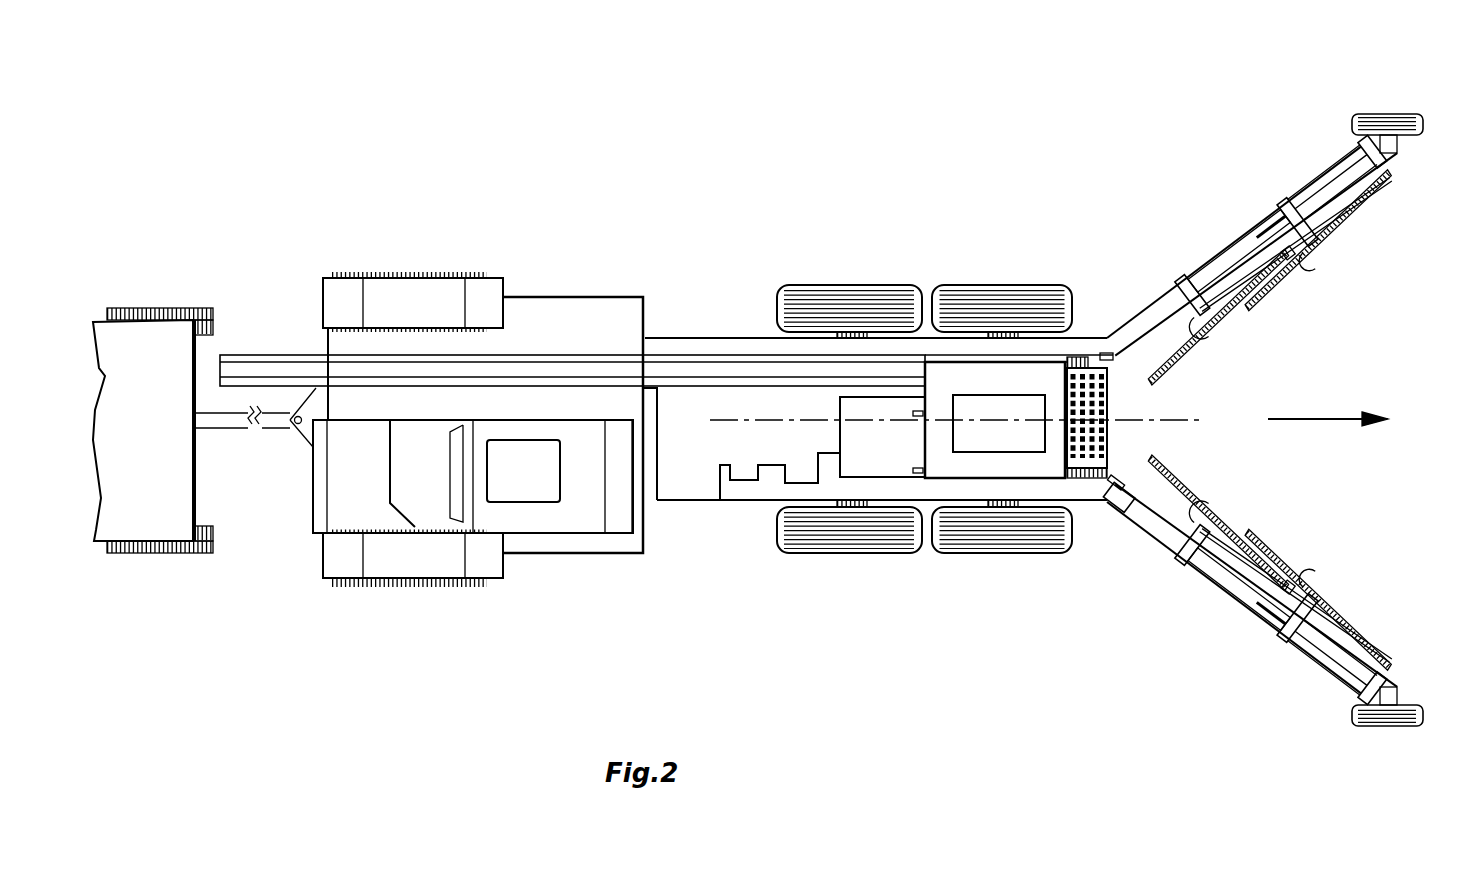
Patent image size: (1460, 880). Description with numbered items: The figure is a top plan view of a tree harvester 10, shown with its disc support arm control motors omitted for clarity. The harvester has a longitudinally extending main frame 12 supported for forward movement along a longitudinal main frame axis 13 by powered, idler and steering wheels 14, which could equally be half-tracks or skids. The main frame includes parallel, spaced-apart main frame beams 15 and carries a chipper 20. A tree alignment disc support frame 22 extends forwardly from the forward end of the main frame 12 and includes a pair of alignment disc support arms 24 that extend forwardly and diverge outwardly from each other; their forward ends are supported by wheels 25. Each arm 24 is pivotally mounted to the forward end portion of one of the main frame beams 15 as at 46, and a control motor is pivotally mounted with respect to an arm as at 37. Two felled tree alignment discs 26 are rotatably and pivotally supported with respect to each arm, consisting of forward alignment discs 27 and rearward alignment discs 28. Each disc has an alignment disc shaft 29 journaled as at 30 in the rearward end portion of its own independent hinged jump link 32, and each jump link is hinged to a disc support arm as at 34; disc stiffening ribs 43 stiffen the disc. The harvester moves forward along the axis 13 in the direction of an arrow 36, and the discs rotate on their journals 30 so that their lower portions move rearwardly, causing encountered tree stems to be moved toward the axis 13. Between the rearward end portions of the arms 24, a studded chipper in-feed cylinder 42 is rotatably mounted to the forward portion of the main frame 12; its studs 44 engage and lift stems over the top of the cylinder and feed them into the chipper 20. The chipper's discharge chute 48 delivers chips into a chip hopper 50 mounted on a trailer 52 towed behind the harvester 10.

The tree harvester 10 is at (976, 248).
The main frame 12 is at (660, 338).
The longitudinal main frame axis 13 is at (742, 421).
The wheels 14 is at (405, 270).
The main frame beams 15 is at (1073, 352).
The chipper 20 is at (920, 446).
The tree alignment disc support frame 22 is at (1170, 296).
The alignment disc support arms 24 is at (1153, 315).
The wheels 25 is at (1383, 113).
The felled tree alignment discs 26 is at (1238, 318).
The forward alignment discs 27 is at (1375, 200).
The rearward alignment discs 28 is at (1158, 378).
The alignment disc shaft 29 is at (1307, 230).
The journal 30 is at (1293, 203).
The hinged jump link 32 is at (1347, 160).
The hinge 34 is at (1390, 155).
The arrow 36 is at (1333, 417).
The pivotal mounting 37 is at (1133, 522).
The studded chipper in-feed cylinder 42 is at (1109, 372).
The disc stiffening ribs 43 is at (1347, 228).
The studs 44 is at (1107, 425).
The pivotal mounting 46 is at (1115, 482).
The discharge chute 48 is at (781, 368).
The chip hopper 50 is at (140, 322).
The trailer 52 is at (212, 430).